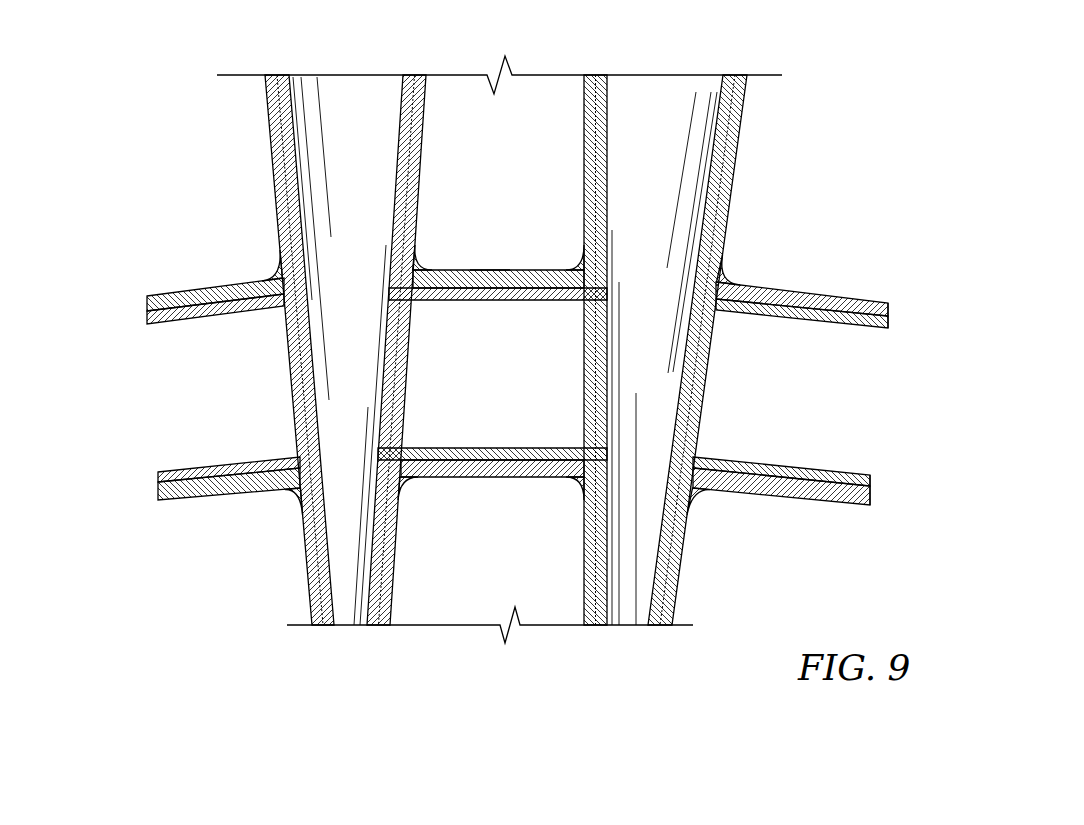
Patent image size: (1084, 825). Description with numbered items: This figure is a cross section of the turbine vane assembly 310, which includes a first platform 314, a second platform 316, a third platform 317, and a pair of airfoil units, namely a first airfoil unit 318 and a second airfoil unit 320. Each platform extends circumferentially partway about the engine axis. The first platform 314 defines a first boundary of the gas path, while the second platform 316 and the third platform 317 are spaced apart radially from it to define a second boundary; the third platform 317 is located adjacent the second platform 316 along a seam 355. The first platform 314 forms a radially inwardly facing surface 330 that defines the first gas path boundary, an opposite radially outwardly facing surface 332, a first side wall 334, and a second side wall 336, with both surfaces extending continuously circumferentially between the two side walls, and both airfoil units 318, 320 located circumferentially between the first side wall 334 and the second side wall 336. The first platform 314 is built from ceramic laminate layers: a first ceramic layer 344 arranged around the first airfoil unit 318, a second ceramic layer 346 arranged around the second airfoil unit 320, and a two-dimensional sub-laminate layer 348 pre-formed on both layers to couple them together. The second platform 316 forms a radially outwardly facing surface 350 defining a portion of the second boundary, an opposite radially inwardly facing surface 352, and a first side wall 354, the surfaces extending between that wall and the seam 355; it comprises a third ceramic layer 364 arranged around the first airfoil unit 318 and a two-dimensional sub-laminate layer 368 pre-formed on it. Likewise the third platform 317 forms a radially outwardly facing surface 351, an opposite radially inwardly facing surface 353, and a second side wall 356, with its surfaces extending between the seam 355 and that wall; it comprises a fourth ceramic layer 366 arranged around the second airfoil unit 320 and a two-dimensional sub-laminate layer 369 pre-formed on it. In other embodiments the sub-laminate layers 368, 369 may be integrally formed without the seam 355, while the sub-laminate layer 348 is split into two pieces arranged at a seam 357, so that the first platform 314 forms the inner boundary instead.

The turbine vane assembly 310 is at (185, 132).
The first platform 314 is at (797, 232).
The second platform 316 is at (770, 547).
The third platform 317 is at (207, 568).
The first airfoil unit 318 is at (737, 383).
The second airfoil unit 320 is at (281, 370).
The radially inwardly facing surface 330 is at (808, 322).
The radially outwardly facing surface 332 is at (805, 290).
The first side wall 334 is at (895, 322).
The second side wall 336 is at (143, 313).
The first ceramic layer 344 is at (534, 305).
The second ceramic layer 346 is at (460, 305).
The 2D sub-laminate layer 348 is at (498, 221).
The radially outwardly facing surface 350 is at (790, 463).
The radially outwardly facing surface 351 is at (205, 470).
The radially inwardly facing surface 352 is at (792, 496).
The radially inwardly facing surface 353 is at (205, 497).
The first side wall 354 is at (875, 488).
The seam 355 is at (492, 499).
The second side wall 356 is at (171, 483).
The seam 357 is at (490, 268).
The third ceramic layer 364 is at (528, 445).
The fourth ceramic layer 366 is at (458, 445).
The 2D sub-laminate layer 368 is at (730, 493).
The 2D sub-laminate layer 369 is at (258, 495).